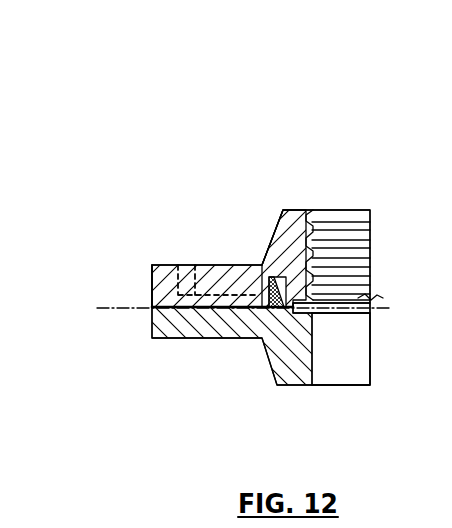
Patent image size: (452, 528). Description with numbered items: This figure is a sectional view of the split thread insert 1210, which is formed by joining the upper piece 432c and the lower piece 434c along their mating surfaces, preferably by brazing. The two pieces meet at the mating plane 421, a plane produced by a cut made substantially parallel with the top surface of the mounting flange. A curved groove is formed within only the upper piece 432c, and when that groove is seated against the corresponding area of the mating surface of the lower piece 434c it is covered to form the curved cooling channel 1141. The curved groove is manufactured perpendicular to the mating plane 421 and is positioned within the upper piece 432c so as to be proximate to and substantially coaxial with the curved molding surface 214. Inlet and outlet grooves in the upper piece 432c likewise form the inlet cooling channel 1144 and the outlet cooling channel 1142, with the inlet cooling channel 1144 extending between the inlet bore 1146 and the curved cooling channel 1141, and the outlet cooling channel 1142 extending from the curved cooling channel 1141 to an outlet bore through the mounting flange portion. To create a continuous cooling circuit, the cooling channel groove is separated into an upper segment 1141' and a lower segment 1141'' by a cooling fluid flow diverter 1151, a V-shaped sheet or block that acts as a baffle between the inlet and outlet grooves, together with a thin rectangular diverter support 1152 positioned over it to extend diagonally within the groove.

The split thread insert 1210 is at (113, 131).
The outlet cooling channel 1142 is at (202, 262).
The inlet cooling channel 1144 is at (218, 280).
The inlet bore 1146 is at (160, 262).
The upper piece 432c is at (150, 282).
The lower piece 434c is at (150, 315).
The mating plane 421 is at (100, 308).
The curved cooling channel 1141 is at (304, 232).
The upper segment 1141' is at (258, 223).
The lower segment 1141'' is at (255, 357).
The cooling fluid flow diverter 1151 is at (268, 310).
The diverter support 1152 is at (307, 297).
The curved molding surface 214 is at (328, 335).